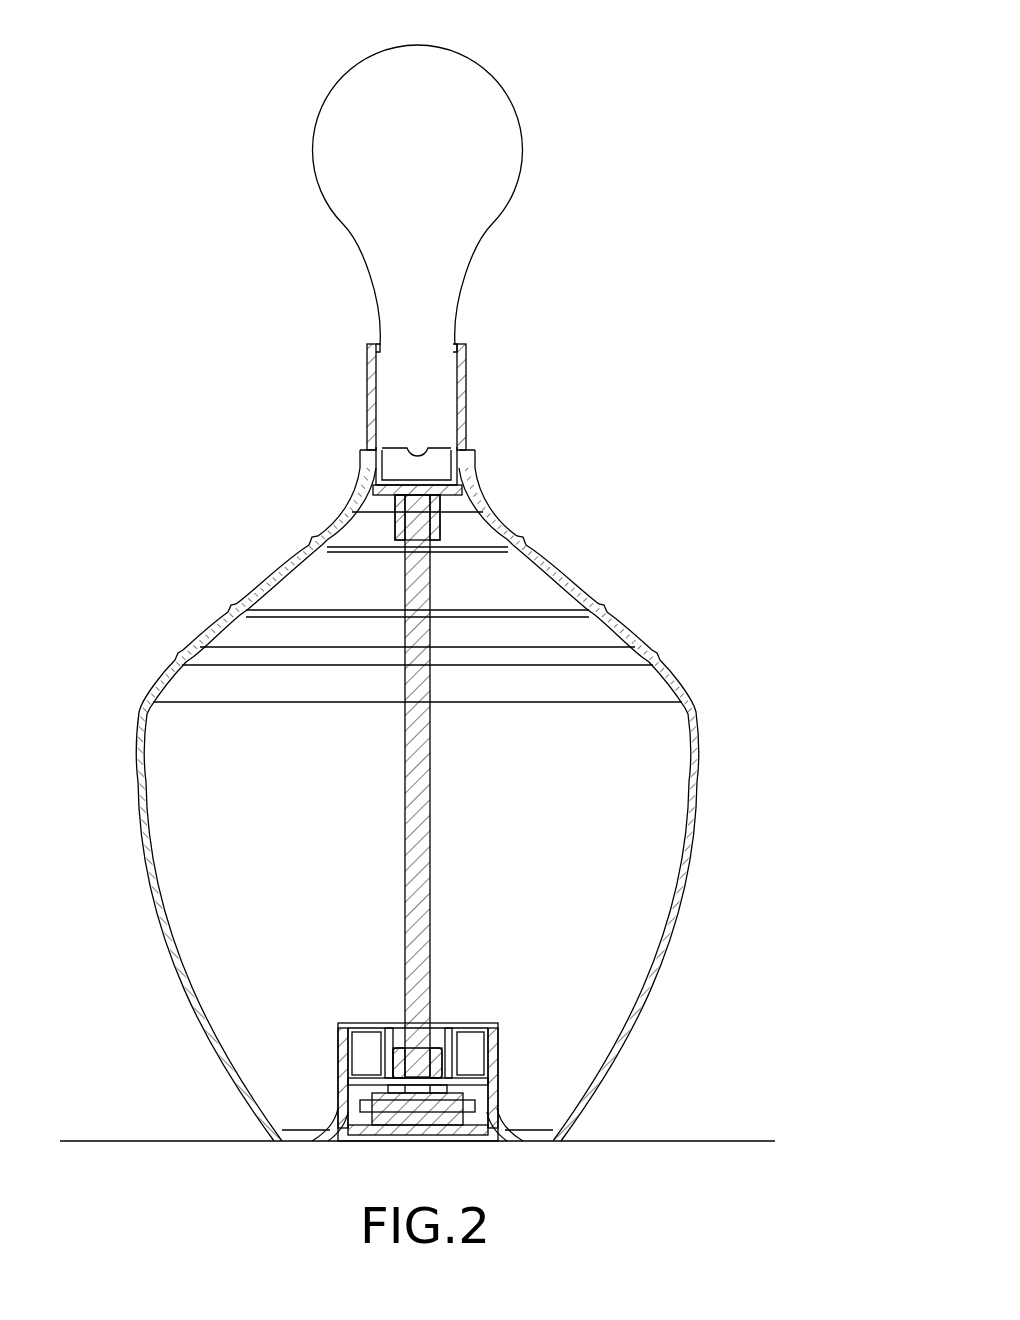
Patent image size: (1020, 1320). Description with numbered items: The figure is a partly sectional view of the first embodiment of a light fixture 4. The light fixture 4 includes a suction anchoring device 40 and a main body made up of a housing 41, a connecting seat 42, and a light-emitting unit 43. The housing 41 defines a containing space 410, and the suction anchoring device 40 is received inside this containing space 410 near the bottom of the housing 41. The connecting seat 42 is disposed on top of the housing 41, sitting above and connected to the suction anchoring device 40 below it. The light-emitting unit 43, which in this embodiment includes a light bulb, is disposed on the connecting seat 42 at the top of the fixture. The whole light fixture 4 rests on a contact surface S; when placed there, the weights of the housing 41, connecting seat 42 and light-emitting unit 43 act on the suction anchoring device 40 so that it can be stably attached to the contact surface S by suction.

The light fixture 4 is at (190, 522).
The suction anchoring device 40 is at (500, 1050).
The housing 41 is at (688, 757).
The containing space 410 is at (643, 892).
The connecting seat 42 is at (463, 398).
The light-emitting unit 43 is at (525, 163).
The contact surface S is at (737, 1138).